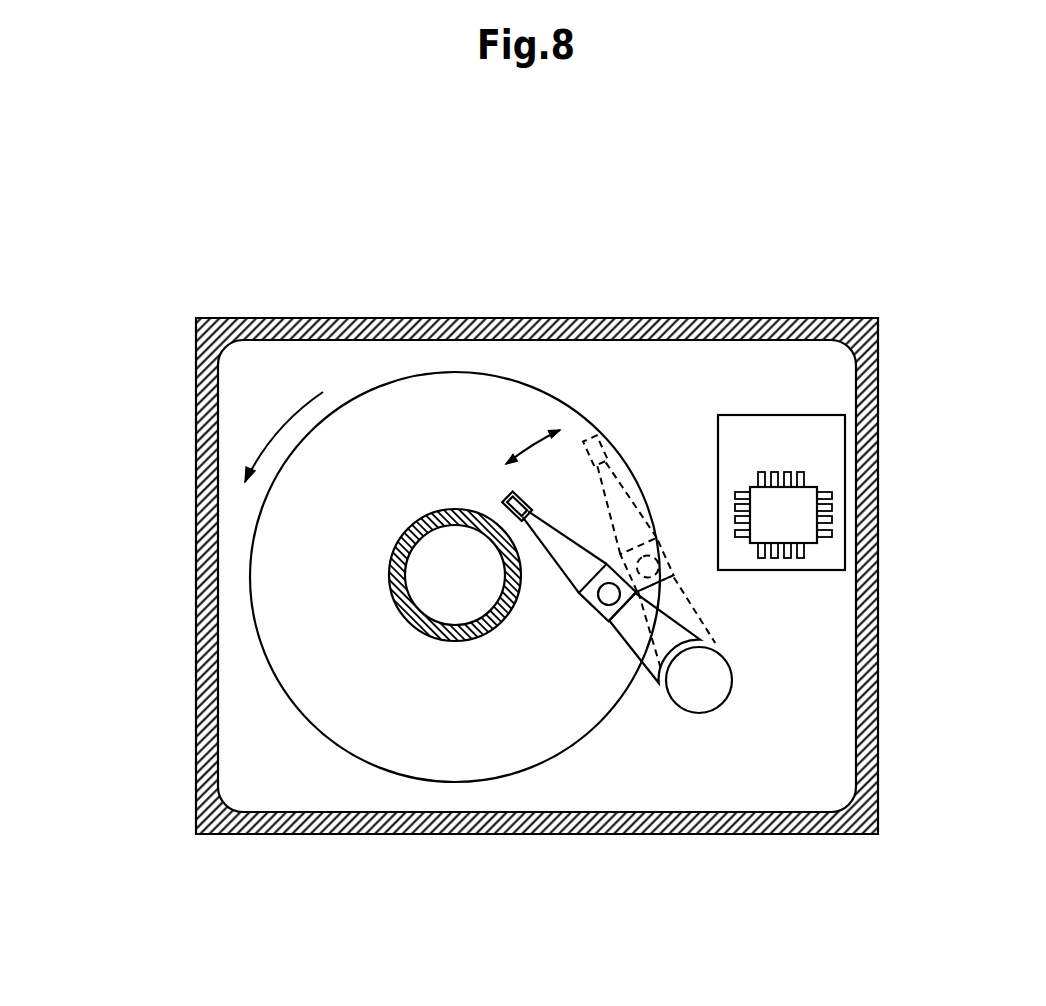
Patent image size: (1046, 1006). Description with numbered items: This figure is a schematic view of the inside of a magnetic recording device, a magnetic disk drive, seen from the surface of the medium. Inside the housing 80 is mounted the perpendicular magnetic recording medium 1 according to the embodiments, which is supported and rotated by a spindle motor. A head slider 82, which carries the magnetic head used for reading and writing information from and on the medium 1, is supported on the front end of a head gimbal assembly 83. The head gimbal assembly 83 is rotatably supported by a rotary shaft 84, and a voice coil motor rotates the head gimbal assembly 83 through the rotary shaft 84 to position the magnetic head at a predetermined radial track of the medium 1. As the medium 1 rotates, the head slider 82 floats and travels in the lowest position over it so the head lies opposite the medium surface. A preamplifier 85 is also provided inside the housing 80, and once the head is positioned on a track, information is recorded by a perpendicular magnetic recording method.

The perpendicular magnetic recording medium 1 is at (381, 433).
The housing 80 is at (196, 645).
The head slider 82 is at (560, 430).
The head gimbal assembly 83 is at (637, 653).
The rotary shaft 84 is at (690, 692).
The preamplifier 85 is at (782, 482).